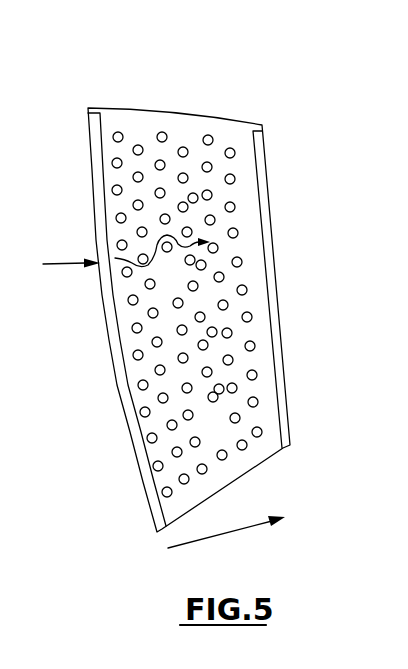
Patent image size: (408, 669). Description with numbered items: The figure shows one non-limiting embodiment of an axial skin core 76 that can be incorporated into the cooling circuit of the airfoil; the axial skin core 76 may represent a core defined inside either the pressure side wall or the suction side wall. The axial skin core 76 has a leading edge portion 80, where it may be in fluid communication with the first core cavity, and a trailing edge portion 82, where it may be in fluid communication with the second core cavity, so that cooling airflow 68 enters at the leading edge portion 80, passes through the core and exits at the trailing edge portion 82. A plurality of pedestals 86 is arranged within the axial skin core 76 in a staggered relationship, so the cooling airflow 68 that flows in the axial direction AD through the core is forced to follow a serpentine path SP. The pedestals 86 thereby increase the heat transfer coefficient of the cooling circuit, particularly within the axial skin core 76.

The axial skin core 76 is at (198, 275).
The leading edge portion 80 is at (105, 333).
The trailing edge portion 82 is at (272, 315).
The pedestals 86 is at (162, 132).
The serpentine path SP is at (191, 245).
The cooling airflow 68 is at (62, 264).
The axial direction AD is at (237, 530).